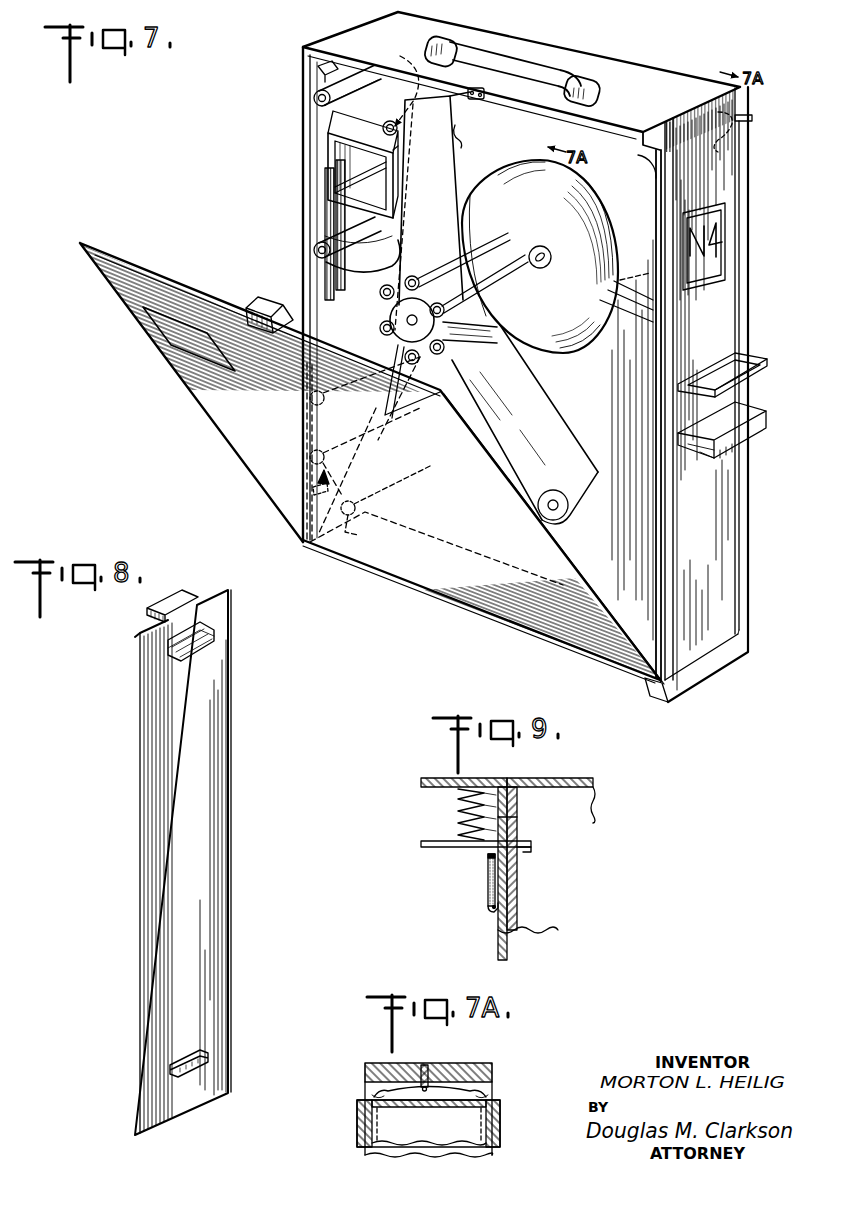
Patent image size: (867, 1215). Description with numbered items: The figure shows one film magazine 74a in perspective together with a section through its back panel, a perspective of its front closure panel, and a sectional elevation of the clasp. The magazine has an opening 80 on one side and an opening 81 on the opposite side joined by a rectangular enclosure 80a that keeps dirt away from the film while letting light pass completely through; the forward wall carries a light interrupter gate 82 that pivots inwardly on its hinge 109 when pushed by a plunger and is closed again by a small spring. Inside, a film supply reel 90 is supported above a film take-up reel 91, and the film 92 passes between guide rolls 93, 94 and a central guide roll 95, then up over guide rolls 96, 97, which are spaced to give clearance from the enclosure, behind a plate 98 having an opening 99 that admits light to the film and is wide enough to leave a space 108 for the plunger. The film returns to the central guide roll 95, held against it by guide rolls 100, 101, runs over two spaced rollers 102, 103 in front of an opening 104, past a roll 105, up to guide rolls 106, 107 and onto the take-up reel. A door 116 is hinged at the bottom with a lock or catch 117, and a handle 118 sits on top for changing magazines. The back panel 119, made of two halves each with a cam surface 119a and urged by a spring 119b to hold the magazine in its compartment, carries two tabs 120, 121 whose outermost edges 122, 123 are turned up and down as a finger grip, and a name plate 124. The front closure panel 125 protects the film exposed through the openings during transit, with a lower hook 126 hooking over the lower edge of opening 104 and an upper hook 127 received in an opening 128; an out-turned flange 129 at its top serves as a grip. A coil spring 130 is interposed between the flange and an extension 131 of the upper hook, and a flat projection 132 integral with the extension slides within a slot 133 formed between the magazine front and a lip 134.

In FIG. 7, the film magazine 74a is at (620, 82).
In FIG. 9, the film magazine 74a is at (586, 778).
In FIG. 7, the opening 80 is at (168, 338).
In FIG. 7, the enclosure 80a is at (396, 150).
In FIG. 7, the opening 81 is at (467, 140).
In FIG. 7, the light interrupter gate 82 is at (402, 190).
In FIG. 7, the film supply reel 90 is at (538, 247).
In FIG. 7, the film take-up reel 91 is at (565, 514).
In FIG. 7, the film 92 is at (452, 210).
In FIG. 7, the guide roll 93 is at (472, 288).
In FIG. 7, the guide roll 94 is at (432, 268).
In FIG. 7, the central guide roll 95 is at (465, 323).
In FIG. 7, the guide roll 96 is at (399, 130).
In FIG. 7, the guide roll 97 is at (315, 101).
In FIG. 7, the plate 98 is at (325, 222).
In FIG. 7, the opening 99 is at (334, 186).
In FIG. 7, the guide roll 100 is at (382, 292).
In FIG. 7, the guide roll 101 is at (382, 325).
In FIG. 7, the roller 102 is at (310, 399).
In FIG. 7, the roller 103 is at (311, 455).
In FIG. 7, the opening 104 is at (316, 488).
In FIG. 7, the roll 105 is at (386, 503).
In FIG. 7, the guide roll 106 is at (416, 372).
In FIG. 7, the guide roll 107 is at (445, 353).
In FIG. 7, the space 108 is at (363, 164).
In FIG. 7, the hinge 109 is at (398, 186).
In FIG. 7, the door 116 is at (205, 404).
In FIG. 7, the lock or catch 117 is at (272, 295).
In FIG. 7, the handle 118 is at (561, 68).
In FIG. 7, the back panel 119 is at (722, 290).
In FIG. 7A, the back panel 119 is at (494, 1068).
In FIG. 7, the cam surface 119a is at (652, 132).
In FIG. 7, the spring 119b is at (718, 156).
In FIG. 7A, the spring 119b is at (456, 1094).
In FIG. 7, the tab 120 is at (735, 376).
In FIG. 7, the tab 121 is at (745, 422).
In FIG. 7, the outermost edge 122 is at (760, 366).
In FIG. 7, the outermost edge 123 is at (755, 437).
In FIG. 7, the name plate 124 is at (720, 226).
In FIG. 8, the front closure panel 125 is at (215, 768).
In FIG. 9, the front closure panel 125 is at (500, 938).
In FIG. 8, the lower hook 126 is at (210, 1058).
In FIG. 8, the upper hook 127 is at (210, 628).
In FIG. 9, the upper hook 127 is at (525, 852).
In FIG. 7, the opening 128 is at (318, 72).
In FIG. 9, the opening 128 is at (518, 830).
In FIG. 8, the out-turned flange 129 is at (184, 589).
In FIG. 9, the out-turned flange 129 is at (430, 778).
In FIG. 9, the coil spring 130 is at (455, 812).
In FIG. 9, the extension 131 is at (440, 847).
In FIG. 9, the flat projection 132 is at (487, 886).
In FIG. 9, the slot 133 is at (491, 910).
In FIG. 9, the lip 134 is at (487, 857).